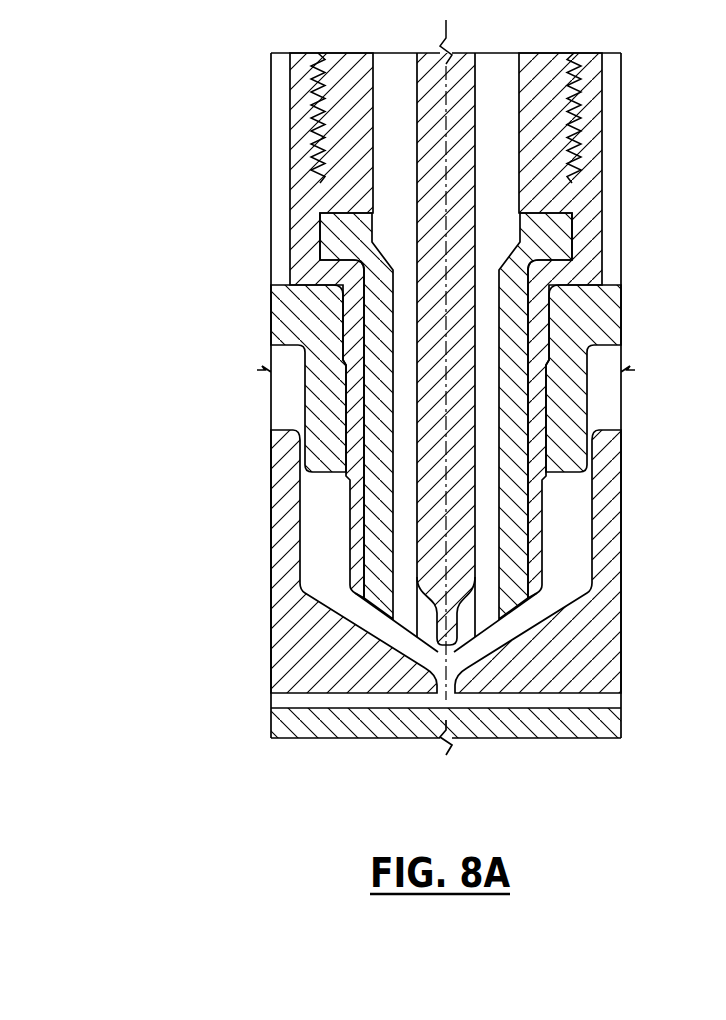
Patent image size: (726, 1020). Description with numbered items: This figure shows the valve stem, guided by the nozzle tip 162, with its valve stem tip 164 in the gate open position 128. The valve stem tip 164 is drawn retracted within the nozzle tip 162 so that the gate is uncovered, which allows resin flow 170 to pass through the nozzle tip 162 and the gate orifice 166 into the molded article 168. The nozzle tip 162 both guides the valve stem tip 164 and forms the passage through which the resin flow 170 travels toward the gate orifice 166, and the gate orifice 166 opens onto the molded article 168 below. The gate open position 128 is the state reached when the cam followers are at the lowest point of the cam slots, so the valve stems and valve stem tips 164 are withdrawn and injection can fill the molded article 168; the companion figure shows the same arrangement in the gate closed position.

The gate open position 128 is at (180, 421).
The nozzle tip 162 is at (510, 555).
The valve stem tip 164 is at (448, 641).
The gate orifice 166 is at (447, 683).
The molded article 168 is at (283, 698).
The resin flow 170 is at (400, 637).